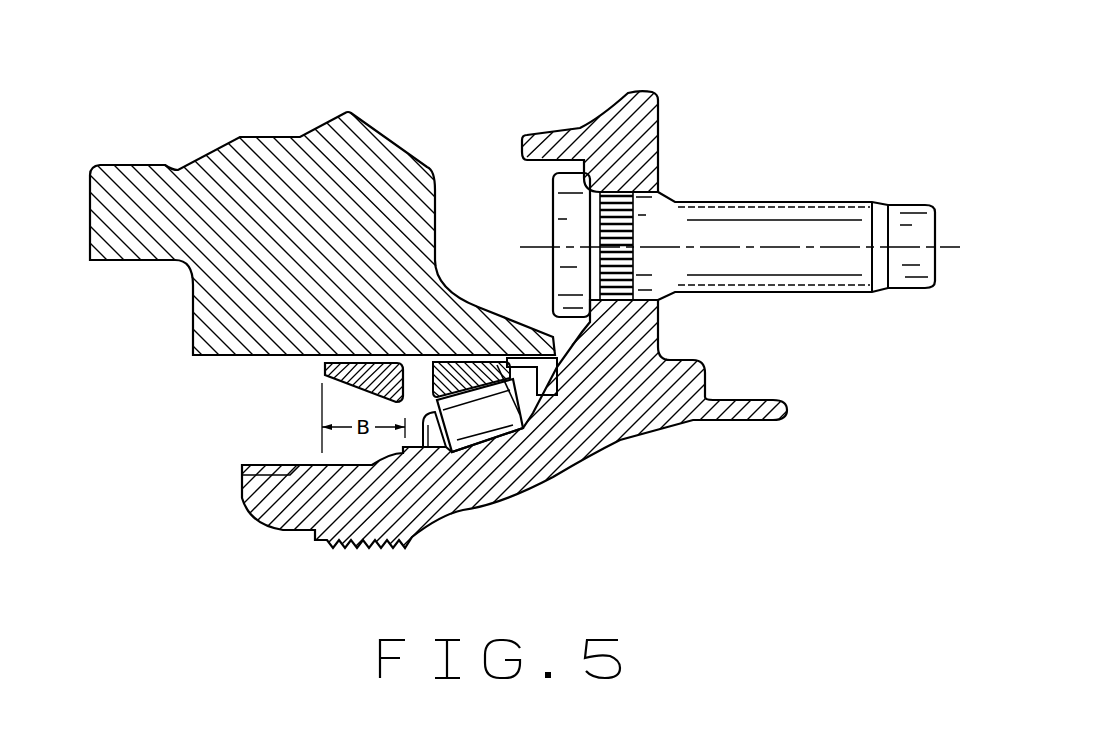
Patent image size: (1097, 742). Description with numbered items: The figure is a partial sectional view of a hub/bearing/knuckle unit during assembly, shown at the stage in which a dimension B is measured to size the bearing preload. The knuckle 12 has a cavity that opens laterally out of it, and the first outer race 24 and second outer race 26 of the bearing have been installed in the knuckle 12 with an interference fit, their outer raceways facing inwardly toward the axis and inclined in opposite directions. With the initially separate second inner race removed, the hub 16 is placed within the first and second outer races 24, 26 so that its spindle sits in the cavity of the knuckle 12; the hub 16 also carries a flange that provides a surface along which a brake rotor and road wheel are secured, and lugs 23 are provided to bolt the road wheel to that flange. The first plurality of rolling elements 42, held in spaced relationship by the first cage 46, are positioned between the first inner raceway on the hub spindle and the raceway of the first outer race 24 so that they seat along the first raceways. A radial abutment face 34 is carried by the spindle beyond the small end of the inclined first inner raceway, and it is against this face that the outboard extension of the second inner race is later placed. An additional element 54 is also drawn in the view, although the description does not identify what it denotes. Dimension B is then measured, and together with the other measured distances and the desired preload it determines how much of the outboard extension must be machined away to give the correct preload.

The knuckle 12 is at (367, 170).
The hub 16 is at (642, 105).
The lugs 23 is at (932, 203).
The first outer race 24 is at (468, 370).
The second outer race 26 is at (362, 357).
The radial abutment face 34 is at (368, 465).
The first plurality of rolling elements 42 is at (493, 415).
The first cage 46 is at (440, 423).
The spacer ring 54 is at (325, 370).